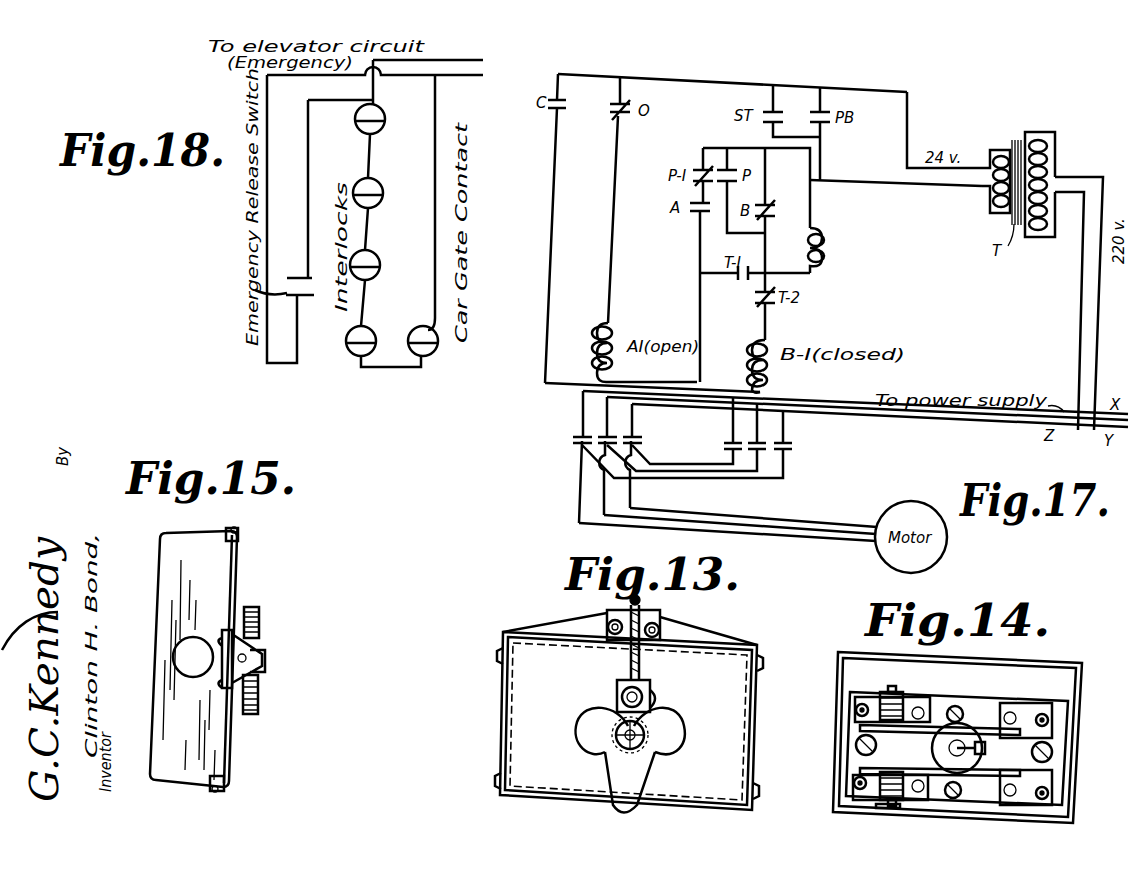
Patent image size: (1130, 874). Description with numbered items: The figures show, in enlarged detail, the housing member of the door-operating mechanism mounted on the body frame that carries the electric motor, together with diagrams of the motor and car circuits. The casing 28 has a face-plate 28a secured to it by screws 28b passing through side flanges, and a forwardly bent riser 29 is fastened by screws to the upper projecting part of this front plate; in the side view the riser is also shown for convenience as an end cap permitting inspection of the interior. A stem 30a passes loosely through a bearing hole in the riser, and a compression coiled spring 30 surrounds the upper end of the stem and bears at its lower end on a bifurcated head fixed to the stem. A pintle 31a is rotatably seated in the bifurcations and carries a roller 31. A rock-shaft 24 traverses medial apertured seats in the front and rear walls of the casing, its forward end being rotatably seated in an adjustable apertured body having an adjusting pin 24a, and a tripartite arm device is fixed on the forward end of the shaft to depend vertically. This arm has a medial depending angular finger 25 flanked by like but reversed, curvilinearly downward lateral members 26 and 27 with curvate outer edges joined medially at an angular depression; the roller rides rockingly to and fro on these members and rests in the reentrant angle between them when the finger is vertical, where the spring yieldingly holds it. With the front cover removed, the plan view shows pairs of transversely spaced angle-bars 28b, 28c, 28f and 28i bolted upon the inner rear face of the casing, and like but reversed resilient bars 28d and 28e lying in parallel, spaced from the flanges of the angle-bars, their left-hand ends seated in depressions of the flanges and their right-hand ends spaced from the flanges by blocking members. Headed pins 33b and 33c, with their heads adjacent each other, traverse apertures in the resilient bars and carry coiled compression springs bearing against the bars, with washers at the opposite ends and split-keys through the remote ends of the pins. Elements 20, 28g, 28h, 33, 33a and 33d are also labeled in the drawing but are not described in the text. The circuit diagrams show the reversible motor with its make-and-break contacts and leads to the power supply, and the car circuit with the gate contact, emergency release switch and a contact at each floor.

In FIG. 15, the pivot pin 20 is at (258, 702).
In FIG. 13, the rock-shaft 24 is at (612, 738).
In FIG. 14, the rock-shaft 24 is at (942, 748).
In FIG. 14, the adjusting pin 24a is at (962, 722).
In FIG. 13, the medial depending angular finger 25 is at (630, 782).
In FIG. 13, the side member of the tripartite arm 26 is at (600, 720).
In FIG. 15, the side member of the tripartite arm 27 is at (265, 621).
In FIG. 13, the side member of the tripartite arm 27 is at (668, 730).
In FIG. 15, the casing 28 is at (165, 556).
In FIG. 14, the casing 28 is at (850, 652).
In FIG. 15, the face-plate 28a is at (232, 575).
In FIG. 13, the face-plate 28a is at (629, 711).
In FIG. 14, the face-plate 28a is at (1080, 692).
In FIG. 15, the angle-bar 28b is at (226, 530).
In FIG. 14, the angle-bar 28b is at (858, 732).
In FIG. 14, the angle-bar 28c is at (865, 800).
In FIG. 14, the resilient bar 28d is at (942, 725).
In FIG. 14, the resilient bar 28e is at (946, 800).
In FIG. 14, the angle-bar 28f is at (1000, 725).
In FIG. 14, the screw 28g is at (1036, 720).
In FIG. 14, the terminal block 28h is at (1012, 798).
In FIG. 14, the angle-bar 28i is at (990, 806).
In FIG. 13, the forwardly bent riser 29 is at (609, 612).
In FIG. 13, the compression coiled spring 30 is at (655, 620).
In FIG. 13, the stem 30a is at (688, 623).
In FIG. 15, the roller 31 is at (246, 655).
In FIG. 13, the roller 31 is at (617, 692).
In FIG. 13, the pintle 31a is at (652, 702).
In FIG. 14, the contact spring 33 is at (890, 694).
In FIG. 14, the contact spring 33a is at (880, 792).
In FIG. 14, the headed pin 33b is at (897, 688).
In FIG. 14, the headed pin 33c is at (894, 806).
In FIG. 14, the contact base 33d is at (880, 808).